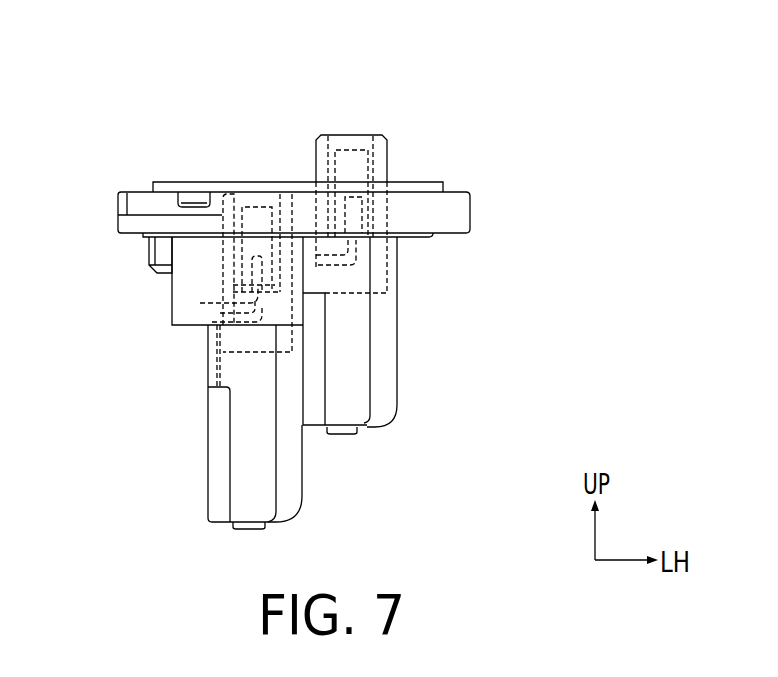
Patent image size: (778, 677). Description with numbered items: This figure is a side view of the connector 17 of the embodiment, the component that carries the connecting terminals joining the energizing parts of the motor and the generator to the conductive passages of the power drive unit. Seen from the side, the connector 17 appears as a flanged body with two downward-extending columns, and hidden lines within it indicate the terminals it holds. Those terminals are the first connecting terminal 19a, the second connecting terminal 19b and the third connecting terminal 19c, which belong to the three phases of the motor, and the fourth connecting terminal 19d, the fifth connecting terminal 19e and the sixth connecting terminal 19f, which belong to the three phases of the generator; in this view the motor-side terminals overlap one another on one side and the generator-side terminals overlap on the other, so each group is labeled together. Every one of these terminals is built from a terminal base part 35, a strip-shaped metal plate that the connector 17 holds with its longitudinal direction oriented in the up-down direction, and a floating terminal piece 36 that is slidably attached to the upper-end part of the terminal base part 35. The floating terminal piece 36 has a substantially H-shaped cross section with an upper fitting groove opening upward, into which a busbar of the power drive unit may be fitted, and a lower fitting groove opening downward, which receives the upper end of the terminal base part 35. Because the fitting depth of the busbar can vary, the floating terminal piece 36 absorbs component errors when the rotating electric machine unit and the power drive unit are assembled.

The connector 17 is at (421, 107).
The floating terminal piece 36 is at (253, 206).
The terminal base part 35 is at (350, 200).
The first connecting terminal 19a is at (357, 247).
The second connecting terminal 19b is at (403, 279).
The third connecting terminal 19c is at (437, 301).
The fourth connecting terminal 19d is at (253, 301).
The fifth connecting terminal 19e is at (145, 334).
The sixth connecting terminal 19f is at (183, 346).